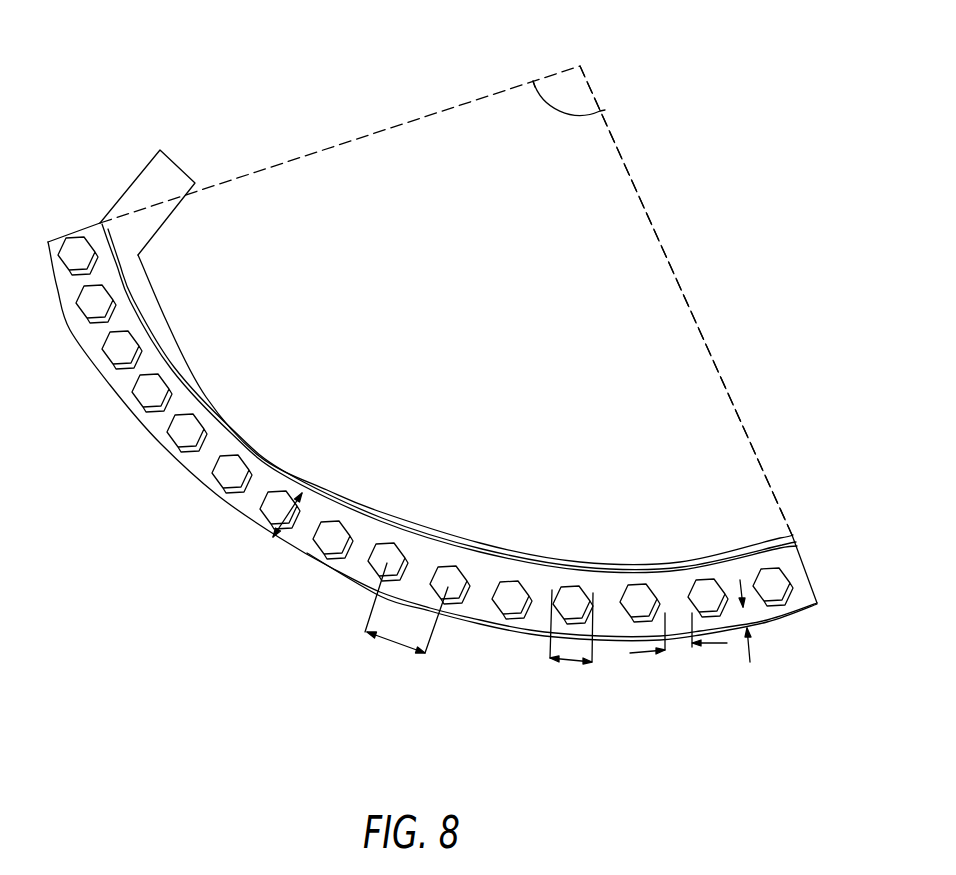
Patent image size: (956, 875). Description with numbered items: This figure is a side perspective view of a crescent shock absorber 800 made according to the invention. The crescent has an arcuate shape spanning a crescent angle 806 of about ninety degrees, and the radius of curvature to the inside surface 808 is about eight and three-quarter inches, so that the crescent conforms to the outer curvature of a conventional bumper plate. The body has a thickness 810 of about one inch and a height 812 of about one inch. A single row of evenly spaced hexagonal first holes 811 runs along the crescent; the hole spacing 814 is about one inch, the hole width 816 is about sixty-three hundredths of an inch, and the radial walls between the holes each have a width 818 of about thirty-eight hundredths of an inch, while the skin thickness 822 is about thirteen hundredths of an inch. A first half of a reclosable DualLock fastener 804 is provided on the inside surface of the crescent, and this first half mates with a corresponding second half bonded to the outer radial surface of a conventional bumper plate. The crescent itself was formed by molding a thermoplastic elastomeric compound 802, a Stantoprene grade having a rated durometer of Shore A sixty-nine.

The crescent shock absorber 800 is at (85, 118).
The thermoplastic elastomeric compound 802 is at (97, 343).
The first half of a reclosable DualLock fastener 804 is at (158, 327).
The crescent angle 806 is at (545, 98).
The radius of curvature to the inside surface 808 is at (637, 195).
The thickness 810 is at (193, 178).
The hexagonal first holes 811 is at (203, 443).
The height 812 is at (293, 528).
The hole spacing 814 is at (397, 642).
The hole width 816 is at (572, 662).
The width of radial walls between the holes 818 is at (640, 653).
The skin thickness 822 is at (748, 662).